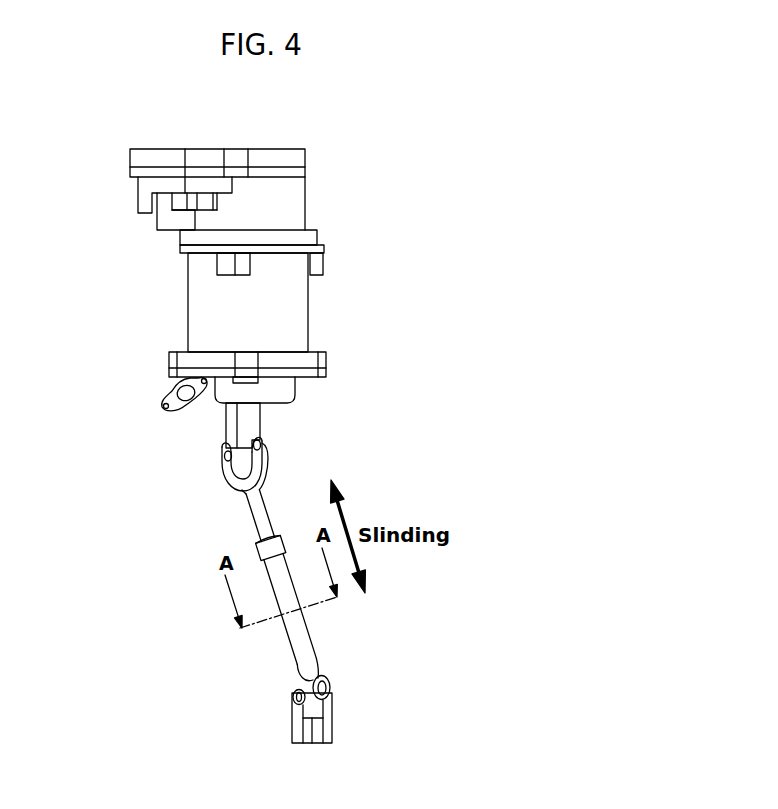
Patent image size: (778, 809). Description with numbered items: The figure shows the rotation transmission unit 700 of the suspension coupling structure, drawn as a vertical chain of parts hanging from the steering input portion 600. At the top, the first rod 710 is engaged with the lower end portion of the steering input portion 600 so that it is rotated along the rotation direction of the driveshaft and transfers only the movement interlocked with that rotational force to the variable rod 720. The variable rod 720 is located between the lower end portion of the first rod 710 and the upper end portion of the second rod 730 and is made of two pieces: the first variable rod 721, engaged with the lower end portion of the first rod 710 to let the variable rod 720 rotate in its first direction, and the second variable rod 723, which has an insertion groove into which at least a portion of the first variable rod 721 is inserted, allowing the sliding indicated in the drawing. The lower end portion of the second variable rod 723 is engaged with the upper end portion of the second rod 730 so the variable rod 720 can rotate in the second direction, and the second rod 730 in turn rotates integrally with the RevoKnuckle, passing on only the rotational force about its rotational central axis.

The rotation transmission unit 700 is at (376, 113).
The steering input portion 600 is at (292, 202).
The first rod 710 is at (257, 423).
The variable rod 720 is at (103, 570).
The first variable rod 721 is at (256, 518).
The second variable rod 723 is at (289, 635).
The second rod 730 is at (330, 722).